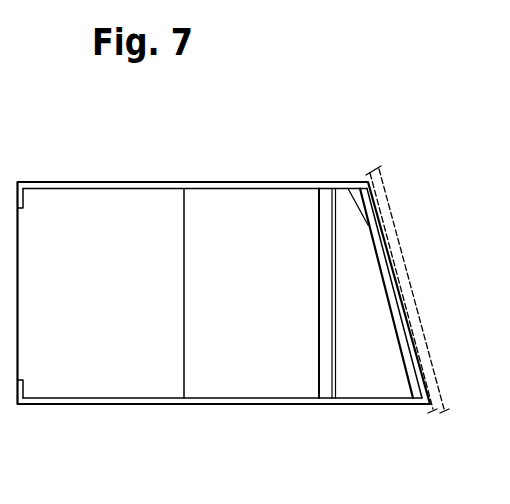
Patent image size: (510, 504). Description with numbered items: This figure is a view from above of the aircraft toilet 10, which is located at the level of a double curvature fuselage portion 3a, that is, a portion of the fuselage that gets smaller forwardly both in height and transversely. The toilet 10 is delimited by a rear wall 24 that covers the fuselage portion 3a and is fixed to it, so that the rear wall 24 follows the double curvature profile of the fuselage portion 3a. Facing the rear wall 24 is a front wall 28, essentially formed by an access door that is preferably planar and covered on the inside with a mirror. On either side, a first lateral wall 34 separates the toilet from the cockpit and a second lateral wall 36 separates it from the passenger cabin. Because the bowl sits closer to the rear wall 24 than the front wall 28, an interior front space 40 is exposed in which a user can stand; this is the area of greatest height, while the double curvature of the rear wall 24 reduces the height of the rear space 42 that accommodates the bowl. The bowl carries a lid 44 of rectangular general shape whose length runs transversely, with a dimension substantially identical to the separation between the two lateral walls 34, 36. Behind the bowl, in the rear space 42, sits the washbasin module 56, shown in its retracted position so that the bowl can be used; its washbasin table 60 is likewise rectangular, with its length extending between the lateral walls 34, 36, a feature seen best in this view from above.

The toilet 10 is at (409, 133).
The double curvature fuselage portion 3a is at (390, 223).
The rear wall 24 is at (397, 303).
The front wall 28 is at (18, 250).
The first lateral wall 34 is at (232, 182).
The second lateral wall 36 is at (262, 403).
The interior front space 40 is at (133, 322).
The rear space 42 is at (239, 275).
The lid 44 is at (278, 377).
The washbasin module 56 is at (276, 203).
The washbasin table 60 is at (207, 372).